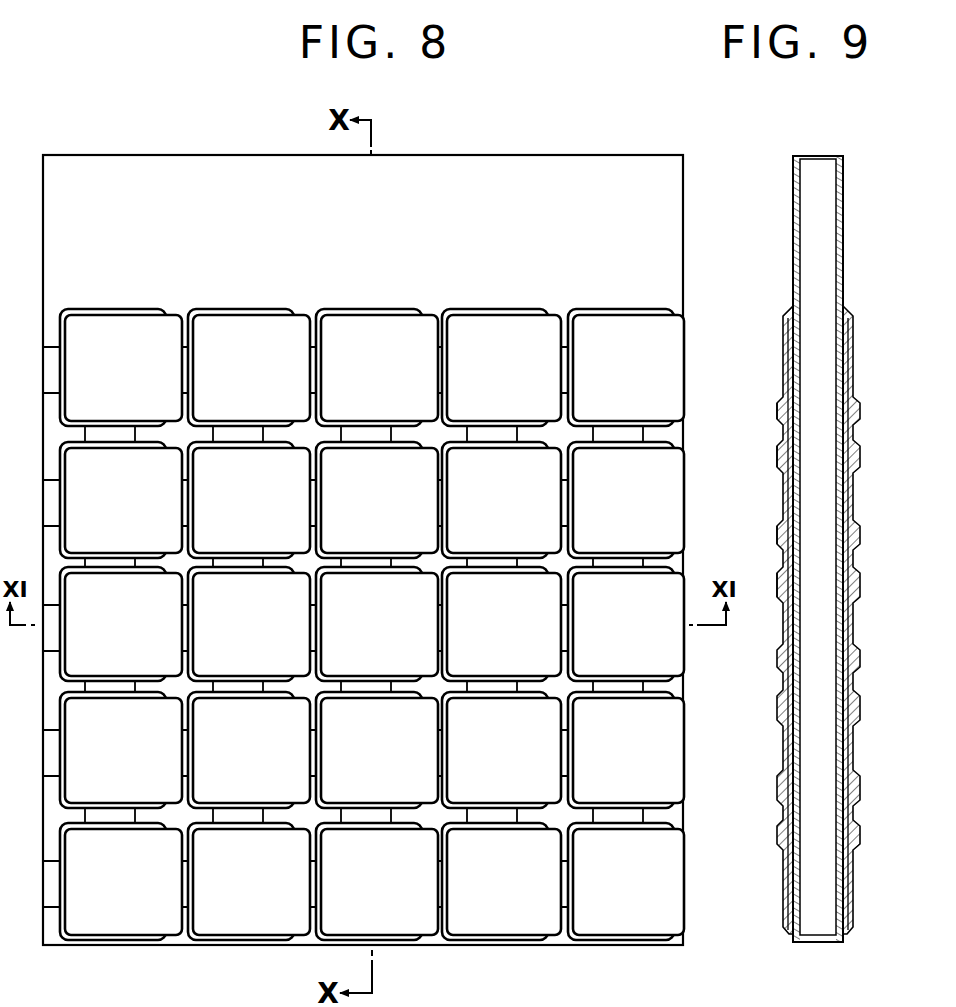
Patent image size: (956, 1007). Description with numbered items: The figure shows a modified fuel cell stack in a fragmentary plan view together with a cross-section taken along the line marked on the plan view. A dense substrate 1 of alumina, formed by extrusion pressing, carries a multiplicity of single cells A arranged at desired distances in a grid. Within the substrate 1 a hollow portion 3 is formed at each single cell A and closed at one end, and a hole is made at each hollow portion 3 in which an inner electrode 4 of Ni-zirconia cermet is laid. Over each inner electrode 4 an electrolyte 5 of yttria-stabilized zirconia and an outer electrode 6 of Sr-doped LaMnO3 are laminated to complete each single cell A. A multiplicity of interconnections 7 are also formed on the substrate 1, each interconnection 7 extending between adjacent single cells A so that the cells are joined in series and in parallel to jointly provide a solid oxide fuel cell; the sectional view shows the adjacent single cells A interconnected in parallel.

In FIG. 8, the dense substrate 1 is at (673, 263).
In FIG. 9, the dense substrate 1 is at (793, 240).
In FIG. 9, the hollow portion 3 is at (812, 853).
In FIG. 9, the inner electrode 4 is at (780, 787).
In FIG. 8, the electrolyte 5 is at (655, 310).
In FIG. 9, the electrolyte 5 is at (782, 773).
In FIG. 8, the outer electrode 6 is at (658, 376).
In FIG. 9, the outer electrode 6 is at (782, 752).
In FIG. 8, the interconnection 7 is at (632, 431).
In FIG. 9, the interconnection 7 is at (782, 823).
In FIG. 8, the single cell A is at (666, 888).
In FIG. 9, the single cell A is at (775, 723).